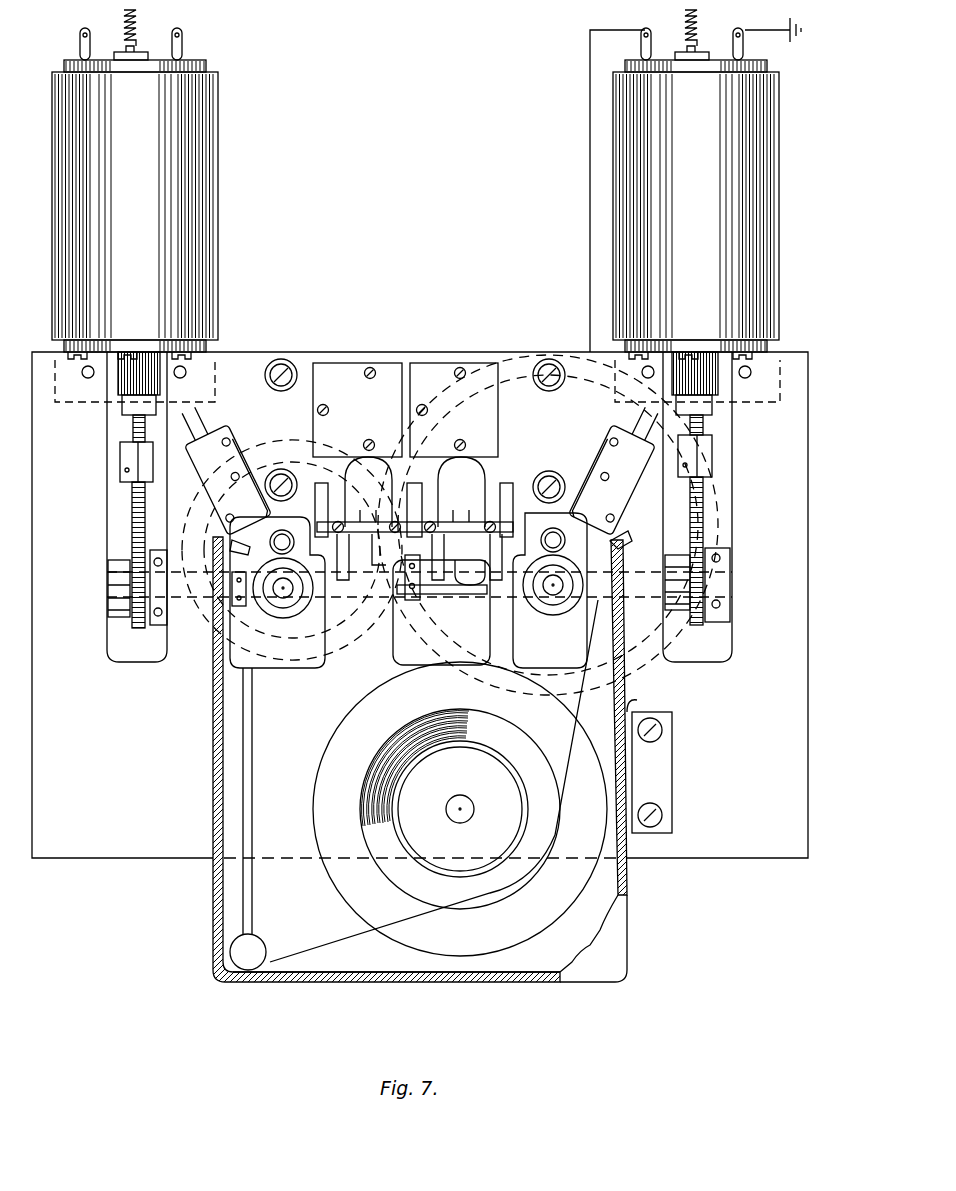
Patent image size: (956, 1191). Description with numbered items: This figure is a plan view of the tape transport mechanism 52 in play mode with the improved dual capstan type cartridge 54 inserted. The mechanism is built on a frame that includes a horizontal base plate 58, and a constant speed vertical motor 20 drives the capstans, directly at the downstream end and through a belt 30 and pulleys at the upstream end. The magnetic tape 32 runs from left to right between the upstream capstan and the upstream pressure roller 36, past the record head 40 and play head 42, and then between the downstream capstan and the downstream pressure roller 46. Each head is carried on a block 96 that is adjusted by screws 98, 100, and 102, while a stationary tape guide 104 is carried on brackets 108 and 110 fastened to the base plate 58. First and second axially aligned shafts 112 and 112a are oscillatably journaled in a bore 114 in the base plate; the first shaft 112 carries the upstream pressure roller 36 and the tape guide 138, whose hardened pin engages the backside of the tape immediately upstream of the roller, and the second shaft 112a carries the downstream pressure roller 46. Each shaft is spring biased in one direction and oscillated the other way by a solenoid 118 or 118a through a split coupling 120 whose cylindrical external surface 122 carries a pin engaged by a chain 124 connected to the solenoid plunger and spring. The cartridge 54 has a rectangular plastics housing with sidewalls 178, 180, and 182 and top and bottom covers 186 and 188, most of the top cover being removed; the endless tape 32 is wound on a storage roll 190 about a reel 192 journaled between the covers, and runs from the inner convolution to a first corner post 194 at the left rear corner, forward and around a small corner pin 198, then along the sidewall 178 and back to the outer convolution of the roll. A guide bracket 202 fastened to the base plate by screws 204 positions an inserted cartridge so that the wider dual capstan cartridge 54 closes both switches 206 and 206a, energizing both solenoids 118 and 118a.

The motor 20 is at (533, 358).
The belt 30 is at (270, 540).
The magnetic tape 32 is at (312, 946).
The upstream pressure roller 36 is at (330, 601).
The record head 40 is at (361, 557).
The play head 42 is at (467, 559).
The downstream pressure roller 46 is at (571, 616).
The tape transport mechanism 52 is at (434, 283).
The dual capstan type cartridge 54 is at (203, 962).
The base plate 58 is at (128, 772).
The block 96 is at (386, 419).
The screw 98 is at (370, 367).
The screw 100 is at (317, 410).
The screw 102 is at (364, 444).
The stationary tape guide 104 is at (456, 598).
The bracket 108 is at (318, 500).
The bracket 110 is at (506, 505).
The first shaft 112 is at (430, 598).
The second shaft 112a is at (536, 616).
The bore 114 is at (185, 626).
The solenoid 118 is at (143, 194).
The solenoid 118a is at (710, 181).
The split coupling 120 is at (722, 604).
The cylindrical external surface 122 is at (120, 615).
The chain 124 is at (130, 528).
The tape guide 138 is at (230, 545).
The sidewall 178 is at (638, 538).
The sidewall 180 is at (630, 887).
The sidewall 182 is at (442, 982).
The top cover 186 is at (613, 959).
The bottom cover 188 is at (362, 964).
The storage roll 190 is at (420, 730).
The reel 192 is at (382, 842).
The first corner post 194 is at (244, 968).
The small corner pin 198 is at (277, 592).
The guide bracket 202 is at (660, 775).
The screw 204 is at (663, 731).
The switch 206 is at (221, 467).
The switch 206a is at (619, 467).